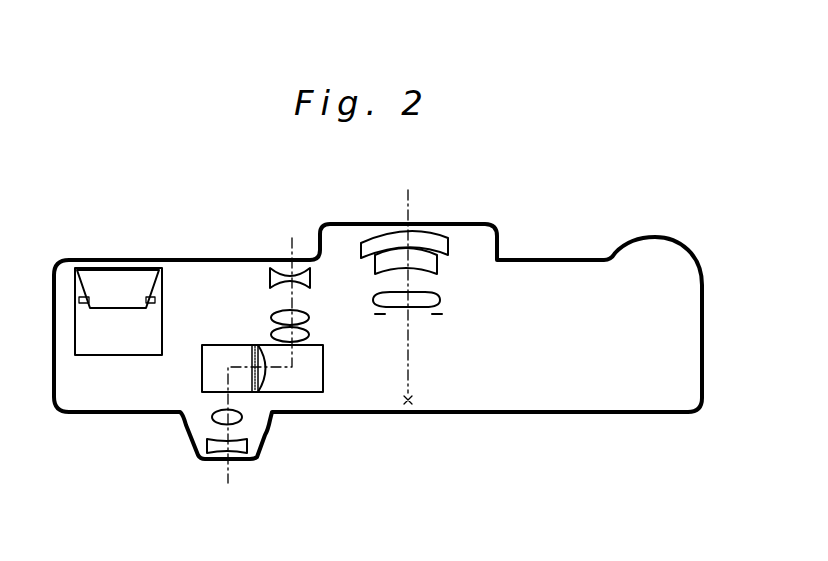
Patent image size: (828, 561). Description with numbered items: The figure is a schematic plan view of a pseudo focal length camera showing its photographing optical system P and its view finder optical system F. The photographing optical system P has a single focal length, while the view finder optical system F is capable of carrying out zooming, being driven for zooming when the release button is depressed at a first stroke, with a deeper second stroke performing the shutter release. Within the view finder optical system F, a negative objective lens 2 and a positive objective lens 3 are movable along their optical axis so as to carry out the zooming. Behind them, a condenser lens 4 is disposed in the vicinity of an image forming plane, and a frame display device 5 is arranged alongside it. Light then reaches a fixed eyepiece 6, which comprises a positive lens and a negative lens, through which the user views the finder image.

The view finder optical system F is at (203, 274).
The negative objective lens 2 is at (270, 279).
The positive objective lens 3 is at (311, 309).
The condenser lens 4 is at (263, 346).
The frame display device 5 is at (252, 347).
The fixed eyepiece 6 is at (250, 405).
The photographing optical system P is at (453, 237).